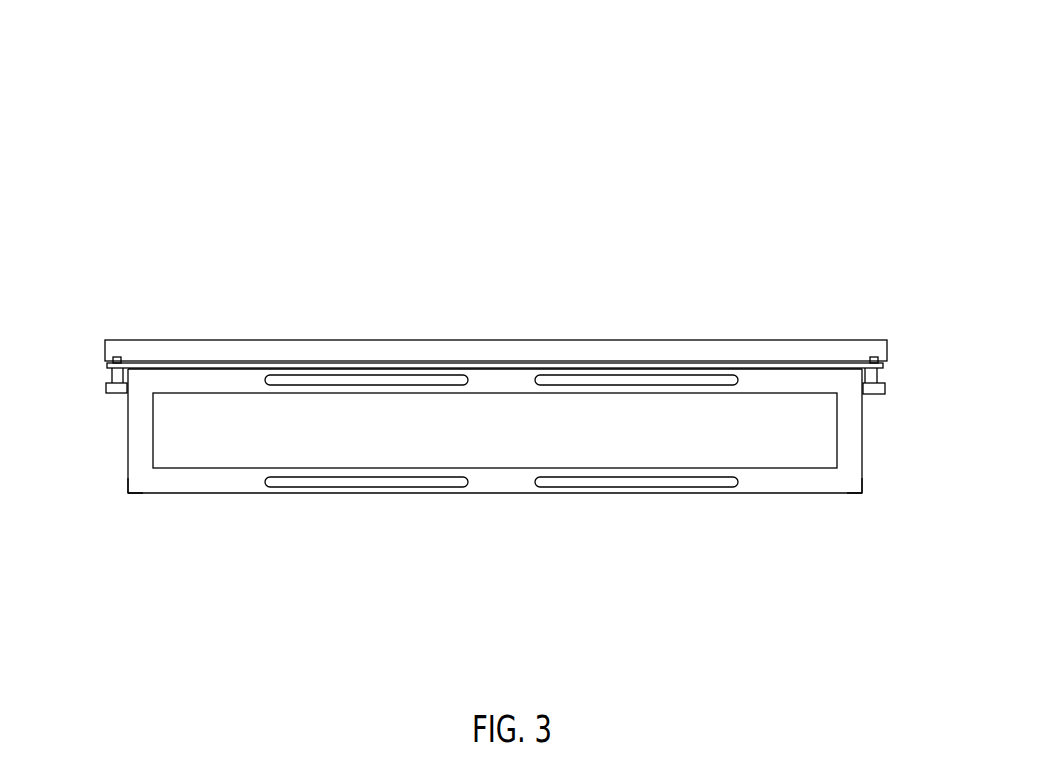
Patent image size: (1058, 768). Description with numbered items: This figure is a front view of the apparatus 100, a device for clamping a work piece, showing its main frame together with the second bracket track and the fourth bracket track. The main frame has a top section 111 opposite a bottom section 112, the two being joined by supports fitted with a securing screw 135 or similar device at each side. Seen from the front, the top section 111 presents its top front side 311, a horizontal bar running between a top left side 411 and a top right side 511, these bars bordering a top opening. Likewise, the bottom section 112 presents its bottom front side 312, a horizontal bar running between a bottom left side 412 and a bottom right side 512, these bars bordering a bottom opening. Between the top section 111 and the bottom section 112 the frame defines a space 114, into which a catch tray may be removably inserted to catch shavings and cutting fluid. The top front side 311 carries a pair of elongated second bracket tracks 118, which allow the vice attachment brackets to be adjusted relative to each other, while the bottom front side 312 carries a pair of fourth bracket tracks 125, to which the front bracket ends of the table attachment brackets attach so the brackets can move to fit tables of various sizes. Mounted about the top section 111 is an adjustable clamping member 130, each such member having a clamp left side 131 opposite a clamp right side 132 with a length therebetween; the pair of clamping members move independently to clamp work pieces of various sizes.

The apparatus 100 is at (562, 73).
The top section 111 is at (690, 342).
The bottom section 112 is at (777, 488).
The space 114 is at (208, 448).
The second bracket track 118 is at (365, 377).
The fourth bracket track 125 is at (364, 482).
The adjustable clamping member 130 is at (270, 340).
The clamp left side 131 is at (116, 357).
The clamp right side 132 is at (868, 357).
The securing screw 135 is at (117, 392).
The top front side 311 is at (513, 377).
The bottom front side 312 is at (503, 483).
The top left side 411 is at (137, 385).
The bottom left side 412 is at (130, 482).
The top right side 511 is at (855, 377).
The bottom right side 512 is at (853, 480).